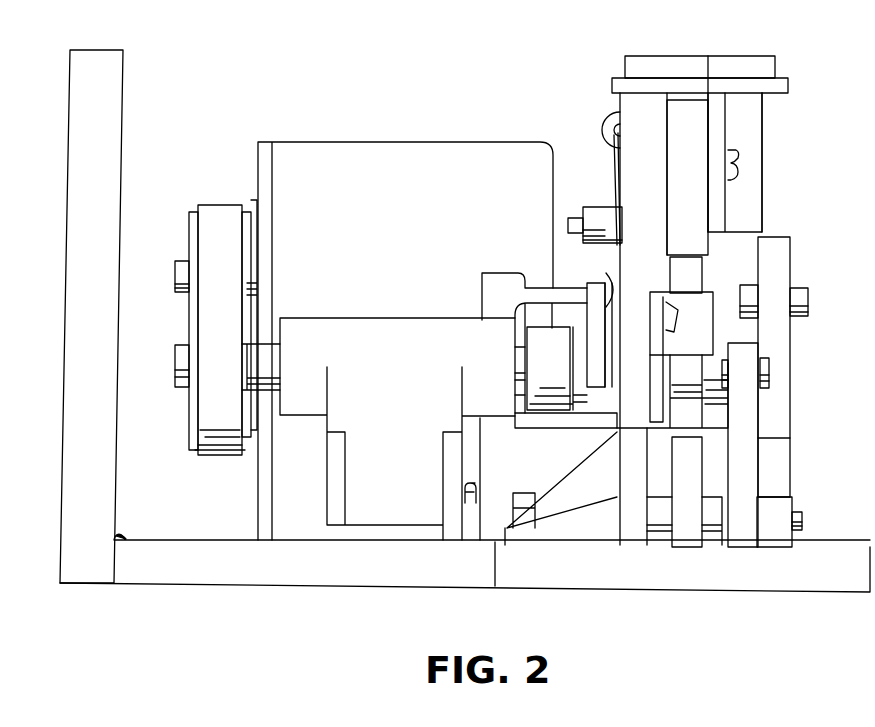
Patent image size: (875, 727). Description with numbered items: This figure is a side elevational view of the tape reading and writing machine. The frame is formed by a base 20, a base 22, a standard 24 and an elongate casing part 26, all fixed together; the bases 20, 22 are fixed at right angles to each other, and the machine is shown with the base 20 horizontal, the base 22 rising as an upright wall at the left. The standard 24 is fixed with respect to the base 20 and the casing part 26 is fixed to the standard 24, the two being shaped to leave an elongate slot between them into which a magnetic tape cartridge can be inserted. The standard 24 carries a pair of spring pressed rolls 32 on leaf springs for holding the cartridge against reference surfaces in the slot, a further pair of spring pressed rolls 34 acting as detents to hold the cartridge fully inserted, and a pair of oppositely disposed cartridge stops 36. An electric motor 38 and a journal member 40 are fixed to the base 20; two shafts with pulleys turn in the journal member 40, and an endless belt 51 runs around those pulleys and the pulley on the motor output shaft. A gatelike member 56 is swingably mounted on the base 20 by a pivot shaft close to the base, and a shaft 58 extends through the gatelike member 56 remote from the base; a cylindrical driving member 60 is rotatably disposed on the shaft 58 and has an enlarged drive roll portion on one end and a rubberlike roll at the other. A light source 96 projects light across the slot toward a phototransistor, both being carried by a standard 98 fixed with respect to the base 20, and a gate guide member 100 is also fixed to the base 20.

The base 20 is at (206, 583).
The base 22 is at (94, 50).
The standard 24 is at (611, 82).
The elongate casing part 26 is at (789, 88).
The spring pressed rolls 32 is at (596, 126).
The spring pressed rolls 34 is at (603, 286).
The cartridge stops 36 is at (660, 345).
The electric motor 38 is at (406, 142).
The journal member 40 is at (401, 318).
The endless belt 51 is at (219, 206).
The gatelike member 56 is at (790, 438).
The shaft 58 is at (769, 378).
The cylindrical driving member 60 is at (688, 402).
The light source 96 is at (809, 305).
The standard 98 is at (792, 270).
The gate guide member 100 is at (702, 482).